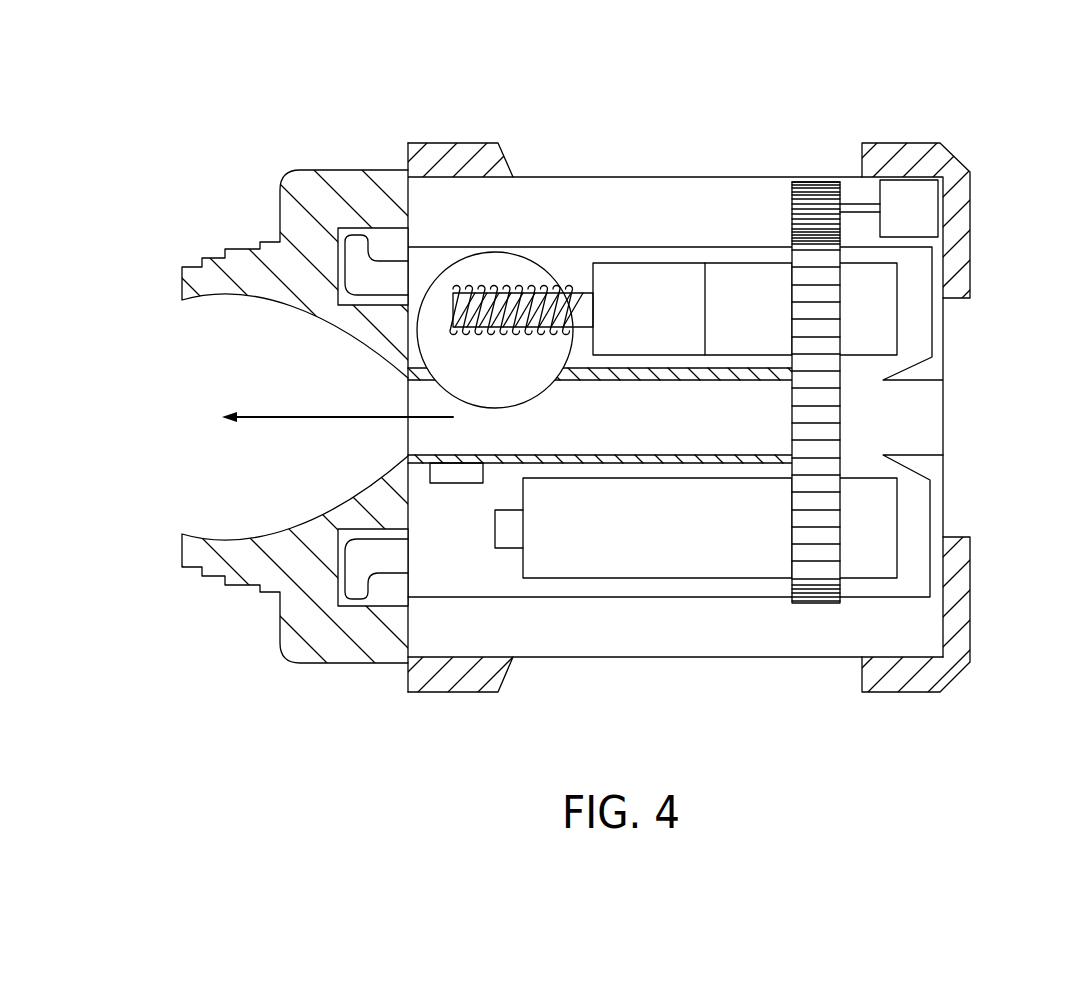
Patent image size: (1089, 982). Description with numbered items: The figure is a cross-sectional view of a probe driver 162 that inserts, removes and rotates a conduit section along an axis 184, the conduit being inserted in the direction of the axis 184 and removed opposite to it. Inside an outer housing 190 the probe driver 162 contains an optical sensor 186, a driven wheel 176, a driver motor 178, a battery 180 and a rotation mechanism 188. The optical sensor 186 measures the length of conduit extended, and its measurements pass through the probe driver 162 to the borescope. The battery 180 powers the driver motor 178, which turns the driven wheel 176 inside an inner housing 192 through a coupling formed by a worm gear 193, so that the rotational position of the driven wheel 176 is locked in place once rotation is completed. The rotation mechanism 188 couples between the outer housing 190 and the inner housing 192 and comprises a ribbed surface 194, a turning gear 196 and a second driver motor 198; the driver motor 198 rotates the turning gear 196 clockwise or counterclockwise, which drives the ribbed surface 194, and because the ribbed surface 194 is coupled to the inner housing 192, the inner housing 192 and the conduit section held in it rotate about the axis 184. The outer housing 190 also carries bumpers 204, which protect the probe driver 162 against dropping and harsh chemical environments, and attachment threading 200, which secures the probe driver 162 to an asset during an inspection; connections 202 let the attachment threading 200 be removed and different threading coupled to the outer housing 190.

The probe driver 162 is at (976, 96).
The driven wheel 176 is at (500, 263).
The driver motor 178 is at (650, 282).
The battery 180 is at (640, 570).
The axis 184 is at (343, 417).
The optical sensor 186 is at (460, 478).
The rotation mechanism 188 is at (772, 226).
The outer housing 190 is at (828, 660).
The inner housing 192 is at (547, 598).
The worm gear 193 is at (482, 315).
The ribbed surface 194 is at (835, 415).
The turning gear 196 is at (818, 183).
The driver motor 198 is at (930, 207).
The attachment threading 200 is at (232, 262).
The connections 202 is at (357, 240).
The bumpers 204 is at (462, 150).